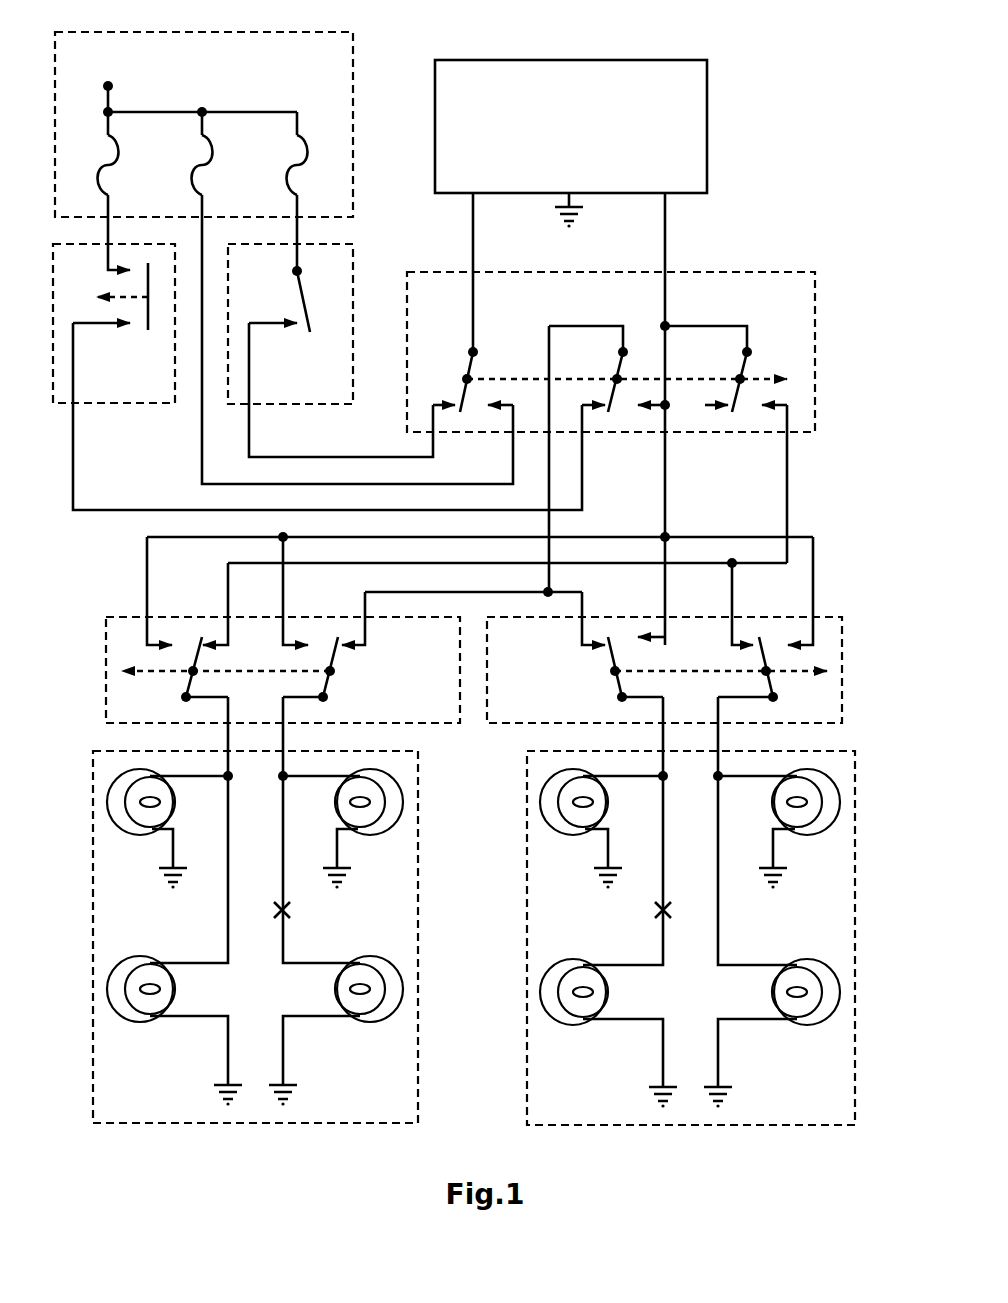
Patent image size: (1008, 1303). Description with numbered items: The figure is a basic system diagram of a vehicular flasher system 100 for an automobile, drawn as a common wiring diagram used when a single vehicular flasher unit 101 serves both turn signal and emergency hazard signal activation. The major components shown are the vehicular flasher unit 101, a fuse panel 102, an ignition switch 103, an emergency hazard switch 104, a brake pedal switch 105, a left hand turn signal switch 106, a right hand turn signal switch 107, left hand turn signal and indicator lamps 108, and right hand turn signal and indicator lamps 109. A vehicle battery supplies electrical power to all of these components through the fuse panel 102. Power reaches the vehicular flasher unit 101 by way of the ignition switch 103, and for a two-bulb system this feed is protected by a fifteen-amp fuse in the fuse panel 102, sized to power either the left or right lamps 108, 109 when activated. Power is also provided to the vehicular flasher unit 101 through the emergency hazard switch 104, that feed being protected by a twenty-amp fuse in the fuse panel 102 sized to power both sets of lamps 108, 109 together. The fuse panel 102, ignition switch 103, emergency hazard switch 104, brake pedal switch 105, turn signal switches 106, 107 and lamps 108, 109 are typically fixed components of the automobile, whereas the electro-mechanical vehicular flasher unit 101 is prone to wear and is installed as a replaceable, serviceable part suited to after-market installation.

The vehicular flasher system 100 is at (572, 33).
The vehicular flasher unit 101 is at (707, 115).
The fuse panel 102 is at (353, 60).
The ignition switch 103 is at (353, 270).
The emergency hazard switch 104 is at (815, 300).
The brake pedal switch 105 is at (108, 404).
The left hand turn signal switch 106 is at (106, 645).
The right hand turn signal switch 107 is at (842, 645).
The left hand turn signal and indicator lamps 108 is at (418, 815).
The right hand turn signal and indicator lamps 109 is at (527, 965).